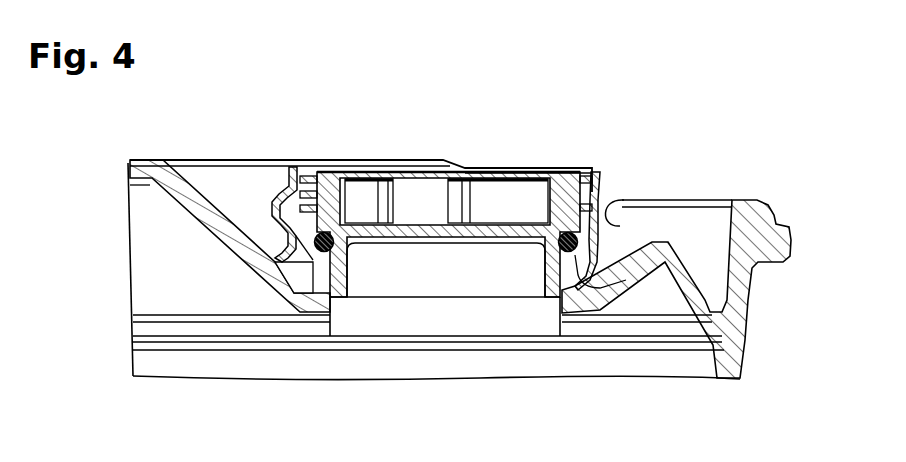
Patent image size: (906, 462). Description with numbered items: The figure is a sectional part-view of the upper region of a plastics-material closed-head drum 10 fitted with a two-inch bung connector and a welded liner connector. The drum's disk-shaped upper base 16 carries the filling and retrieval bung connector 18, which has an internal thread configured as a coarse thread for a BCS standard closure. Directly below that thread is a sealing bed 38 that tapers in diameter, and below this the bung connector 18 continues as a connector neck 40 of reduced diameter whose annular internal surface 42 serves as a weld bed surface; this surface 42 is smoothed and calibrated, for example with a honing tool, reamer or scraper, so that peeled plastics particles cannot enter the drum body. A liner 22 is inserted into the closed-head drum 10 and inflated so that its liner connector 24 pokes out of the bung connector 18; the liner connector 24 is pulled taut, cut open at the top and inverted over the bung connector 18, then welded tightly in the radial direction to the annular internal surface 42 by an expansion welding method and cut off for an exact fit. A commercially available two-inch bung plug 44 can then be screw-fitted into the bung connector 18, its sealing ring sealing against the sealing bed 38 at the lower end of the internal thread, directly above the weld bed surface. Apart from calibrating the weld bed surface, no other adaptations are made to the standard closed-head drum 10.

The closed-head drum 10 is at (722, 130).
The upper base 16 is at (141, 160).
The filling and retrieval bung connector 18 is at (292, 168).
The liner 22 is at (612, 337).
The liner connector 24 is at (332, 317).
The sealing bed 38 is at (600, 198).
The connector neck 40 is at (323, 253).
The annular internal surface 42 is at (565, 254).
The bung plug 44 is at (478, 228).